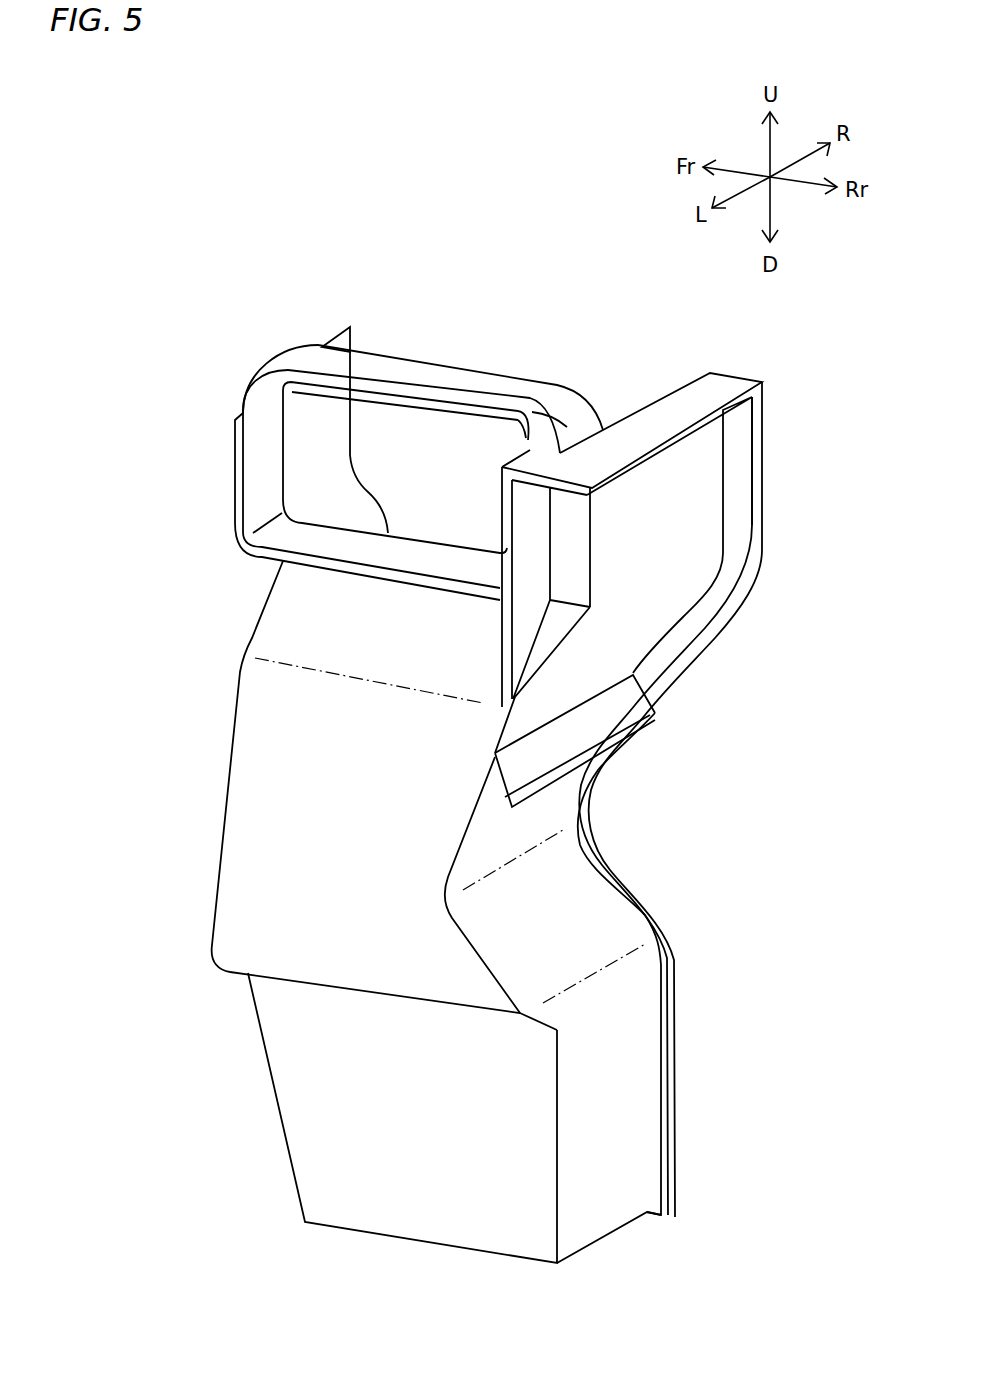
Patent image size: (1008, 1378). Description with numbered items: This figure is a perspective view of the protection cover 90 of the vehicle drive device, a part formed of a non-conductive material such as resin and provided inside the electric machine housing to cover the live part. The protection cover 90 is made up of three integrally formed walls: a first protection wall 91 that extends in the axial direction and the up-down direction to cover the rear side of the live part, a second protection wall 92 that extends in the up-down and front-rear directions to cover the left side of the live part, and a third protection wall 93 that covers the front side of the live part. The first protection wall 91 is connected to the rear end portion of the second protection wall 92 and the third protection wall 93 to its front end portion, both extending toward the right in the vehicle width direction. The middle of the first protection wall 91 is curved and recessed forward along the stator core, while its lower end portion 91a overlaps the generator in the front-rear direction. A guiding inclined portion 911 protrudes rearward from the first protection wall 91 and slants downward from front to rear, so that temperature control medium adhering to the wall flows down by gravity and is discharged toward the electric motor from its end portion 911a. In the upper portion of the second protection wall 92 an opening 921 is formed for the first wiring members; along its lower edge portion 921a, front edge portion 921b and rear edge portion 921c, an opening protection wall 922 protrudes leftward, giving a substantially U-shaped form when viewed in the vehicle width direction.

The protection cover 90 is at (254, 250).
The first protection wall 91 is at (676, 536).
The guiding inclined portion 911 is at (597, 724).
The end portion 911a is at (600, 780).
The lower end portion 91a is at (605, 1223).
The second protection wall 92 is at (262, 918).
The third protection wall 93 is at (215, 848).
The opening 921 is at (405, 456).
The lower edge portion 921a is at (418, 540).
The front edge portion 921b is at (275, 470).
The rear edge portion 921c is at (515, 424).
The opening protection wall 922 is at (367, 553).